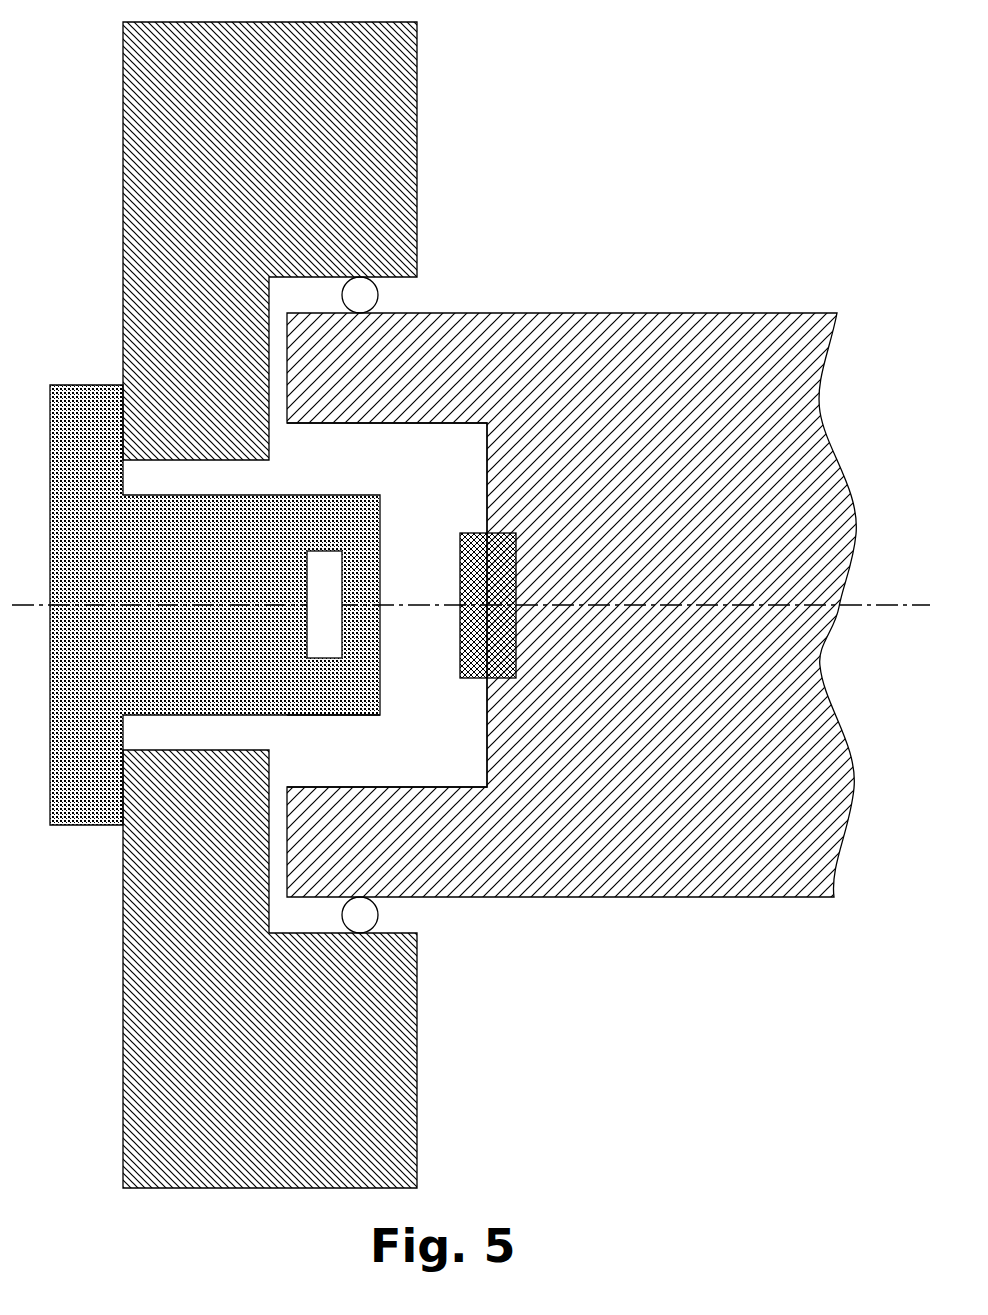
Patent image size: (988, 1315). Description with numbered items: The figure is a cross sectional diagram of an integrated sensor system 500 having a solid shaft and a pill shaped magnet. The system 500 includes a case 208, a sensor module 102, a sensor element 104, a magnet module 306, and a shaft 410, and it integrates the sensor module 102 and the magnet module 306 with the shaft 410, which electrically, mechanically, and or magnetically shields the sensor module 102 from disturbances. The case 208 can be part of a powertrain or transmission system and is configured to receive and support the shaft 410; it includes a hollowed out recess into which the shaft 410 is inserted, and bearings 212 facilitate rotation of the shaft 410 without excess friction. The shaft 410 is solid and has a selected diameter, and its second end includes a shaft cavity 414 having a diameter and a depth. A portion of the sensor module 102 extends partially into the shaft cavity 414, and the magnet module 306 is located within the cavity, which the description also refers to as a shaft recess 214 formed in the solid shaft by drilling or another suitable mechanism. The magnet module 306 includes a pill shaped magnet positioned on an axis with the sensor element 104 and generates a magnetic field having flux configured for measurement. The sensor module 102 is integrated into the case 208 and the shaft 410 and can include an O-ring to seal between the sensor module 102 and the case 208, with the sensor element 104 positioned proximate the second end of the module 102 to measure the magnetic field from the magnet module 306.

The system 500 is at (152, 1222).
The case 208 is at (123, 180).
The shaft 410 is at (561, 313).
The shaft recess 214 is at (354, 464).
The bearings 212 is at (390, 293).
The sensor module 102 is at (98, 826).
The sensor element 104 is at (307, 600).
The magnet module 306 is at (465, 532).
The shaft cavity 414 is at (360, 748).